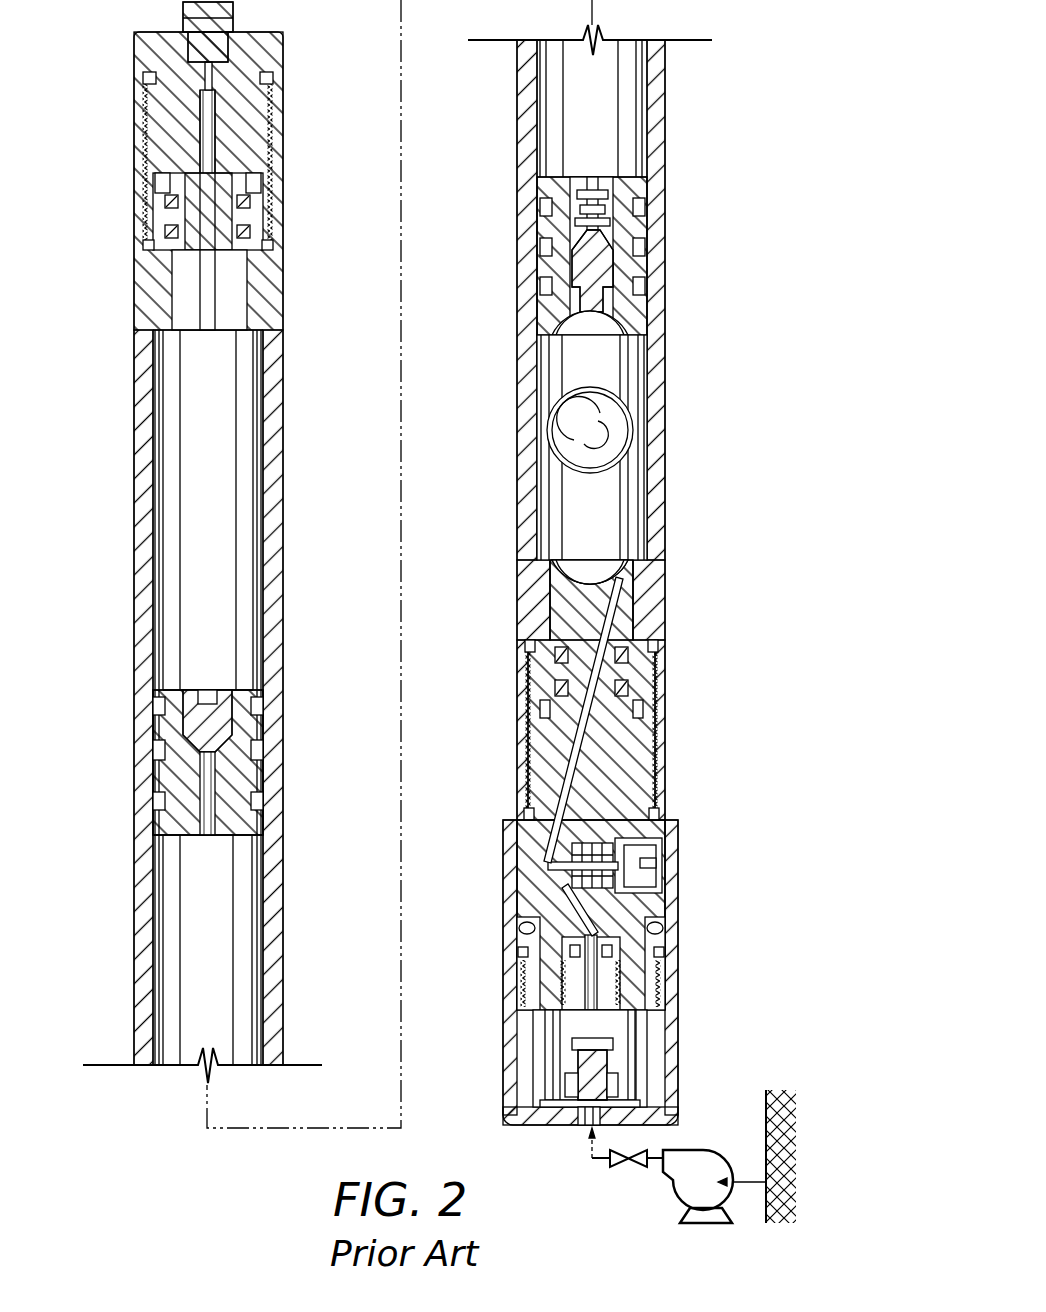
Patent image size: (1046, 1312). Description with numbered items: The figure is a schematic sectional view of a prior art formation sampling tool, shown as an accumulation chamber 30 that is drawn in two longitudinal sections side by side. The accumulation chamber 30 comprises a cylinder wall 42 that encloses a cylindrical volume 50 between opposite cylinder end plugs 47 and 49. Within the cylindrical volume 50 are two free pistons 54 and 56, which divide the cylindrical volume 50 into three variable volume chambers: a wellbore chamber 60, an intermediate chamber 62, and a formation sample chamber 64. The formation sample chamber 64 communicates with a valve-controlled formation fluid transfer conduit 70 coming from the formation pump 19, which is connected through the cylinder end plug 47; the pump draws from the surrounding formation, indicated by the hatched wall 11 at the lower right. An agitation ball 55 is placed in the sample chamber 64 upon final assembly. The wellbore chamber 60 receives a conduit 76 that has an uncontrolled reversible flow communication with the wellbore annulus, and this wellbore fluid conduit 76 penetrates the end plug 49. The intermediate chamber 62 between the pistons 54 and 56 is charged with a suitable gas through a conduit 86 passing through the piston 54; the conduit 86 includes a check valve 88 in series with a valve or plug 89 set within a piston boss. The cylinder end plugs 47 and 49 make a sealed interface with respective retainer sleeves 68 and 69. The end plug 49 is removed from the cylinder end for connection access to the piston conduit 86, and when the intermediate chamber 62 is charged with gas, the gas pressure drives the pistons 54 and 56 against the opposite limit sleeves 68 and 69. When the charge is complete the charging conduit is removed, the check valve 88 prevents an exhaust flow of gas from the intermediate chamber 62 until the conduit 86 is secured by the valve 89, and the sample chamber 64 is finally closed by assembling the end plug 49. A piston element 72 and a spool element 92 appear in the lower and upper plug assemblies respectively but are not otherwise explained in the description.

The formation / casing wall 11 is at (787, 1115).
The formation pump 19 is at (675, 1190).
The accumulation chamber 30 is at (498, 122).
The cylinder wall 42 is at (282, 575).
The cylinder end plug 47 is at (645, 963).
The cylinder end plug 49 is at (155, 65).
The cylindrical volume 50 is at (253, 948).
The free piston 54 is at (250, 780).
The agitation ball 55 is at (628, 423).
The free piston 56 is at (632, 313).
The wellbore chamber 60 is at (175, 525).
The intermediate chamber 62 is at (175, 1010).
The formation sample chamber 64 is at (550, 483).
The retainer sleeve 68 is at (640, 683).
The retainer sleeve 69 is at (160, 232).
The formation fluid transfer conduit 70 is at (555, 807).
The piston 72 is at (622, 1022).
The wellbore fluid conduit 76 is at (215, 157).
The piston conduit 86 is at (205, 810).
The check valve 88 is at (175, 878).
The valve or plug 89 is at (210, 748).
The spool 92 is at (600, 265).